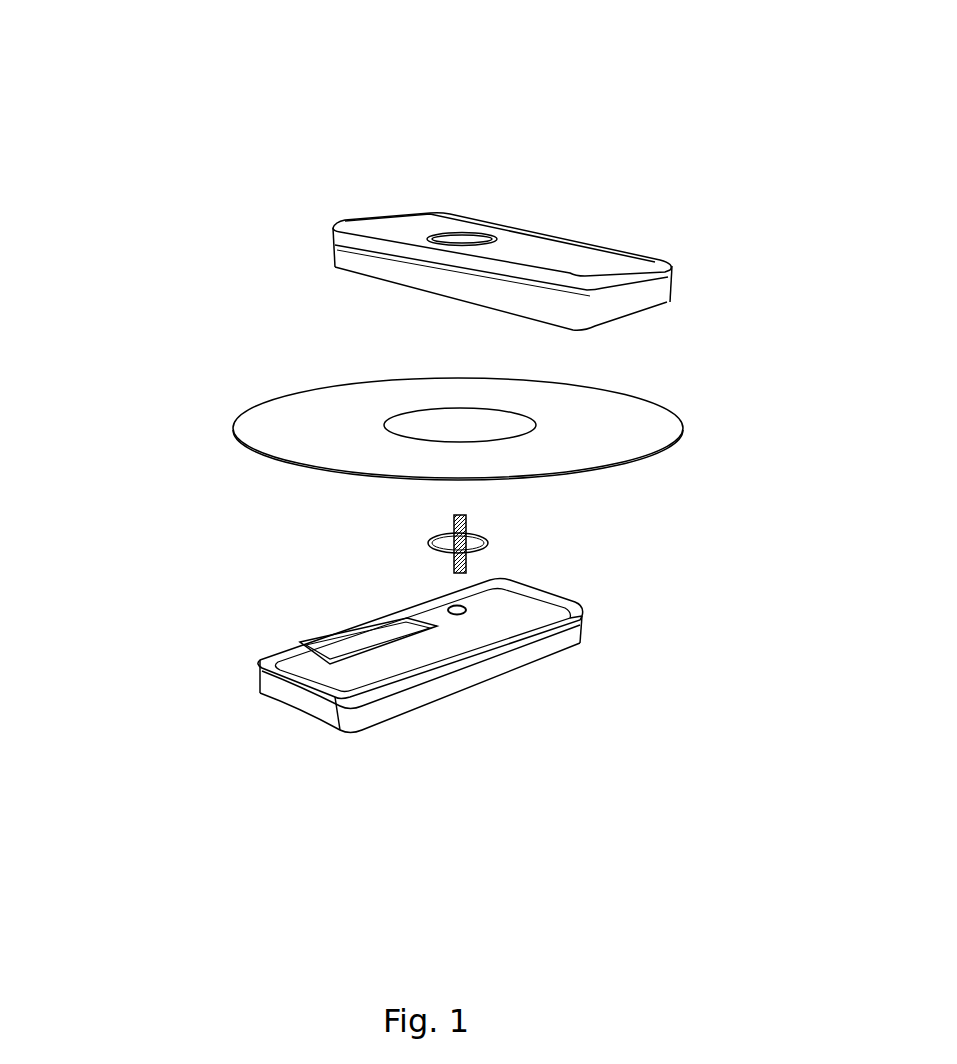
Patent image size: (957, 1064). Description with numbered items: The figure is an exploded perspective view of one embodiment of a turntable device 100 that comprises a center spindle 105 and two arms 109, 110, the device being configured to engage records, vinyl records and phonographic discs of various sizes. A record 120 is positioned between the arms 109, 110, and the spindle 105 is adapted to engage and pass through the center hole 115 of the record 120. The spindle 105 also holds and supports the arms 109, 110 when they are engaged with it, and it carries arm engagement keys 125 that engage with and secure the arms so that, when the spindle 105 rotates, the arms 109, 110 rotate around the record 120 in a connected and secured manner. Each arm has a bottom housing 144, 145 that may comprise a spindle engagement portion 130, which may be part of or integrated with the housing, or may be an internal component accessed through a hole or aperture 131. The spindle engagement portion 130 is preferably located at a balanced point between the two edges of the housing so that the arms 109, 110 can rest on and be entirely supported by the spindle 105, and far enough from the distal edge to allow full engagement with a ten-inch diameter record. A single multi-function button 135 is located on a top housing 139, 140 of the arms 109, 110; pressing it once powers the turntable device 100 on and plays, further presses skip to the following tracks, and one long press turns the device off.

The turntable device 100 is at (184, 111).
The arm 110 is at (482, 208).
The button 135 is at (453, 238).
The top housing 140 is at (537, 255).
The bottom housing 145 is at (380, 273).
The record 120 is at (511, 512).
The center hole 115 is at (457, 425).
The arm engagement keys 125 is at (458, 522).
The center spindle 105 is at (272, 559).
The arm 109 is at (429, 749).
The bottom housing 144 is at (327, 683).
The top housing 139 is at (553, 648).
The spindle engagement portion 130 is at (447, 644).
The hole or aperture 131 is at (468, 612).